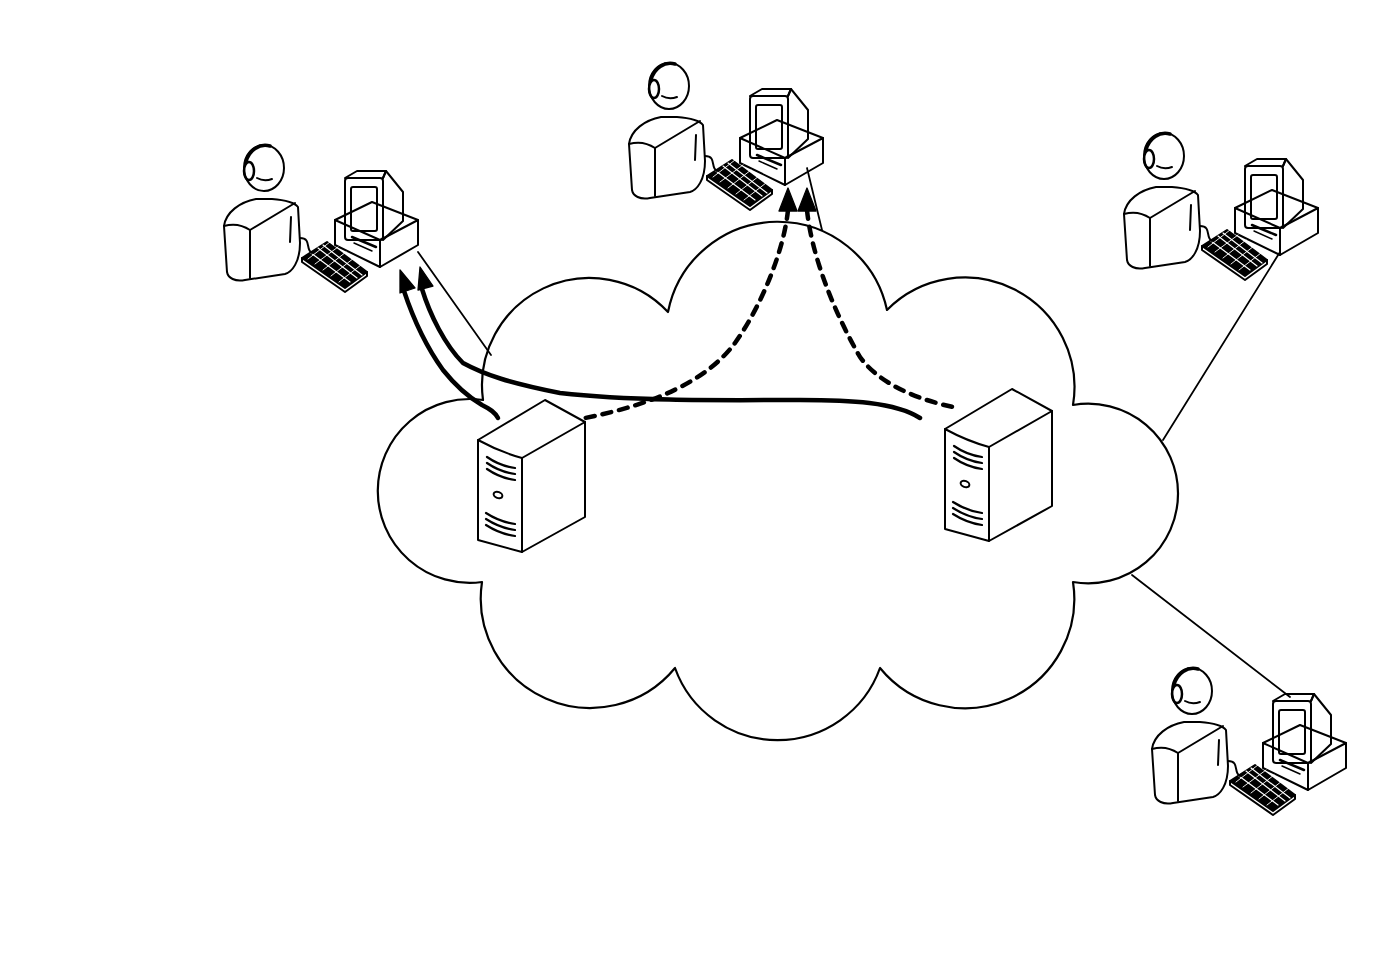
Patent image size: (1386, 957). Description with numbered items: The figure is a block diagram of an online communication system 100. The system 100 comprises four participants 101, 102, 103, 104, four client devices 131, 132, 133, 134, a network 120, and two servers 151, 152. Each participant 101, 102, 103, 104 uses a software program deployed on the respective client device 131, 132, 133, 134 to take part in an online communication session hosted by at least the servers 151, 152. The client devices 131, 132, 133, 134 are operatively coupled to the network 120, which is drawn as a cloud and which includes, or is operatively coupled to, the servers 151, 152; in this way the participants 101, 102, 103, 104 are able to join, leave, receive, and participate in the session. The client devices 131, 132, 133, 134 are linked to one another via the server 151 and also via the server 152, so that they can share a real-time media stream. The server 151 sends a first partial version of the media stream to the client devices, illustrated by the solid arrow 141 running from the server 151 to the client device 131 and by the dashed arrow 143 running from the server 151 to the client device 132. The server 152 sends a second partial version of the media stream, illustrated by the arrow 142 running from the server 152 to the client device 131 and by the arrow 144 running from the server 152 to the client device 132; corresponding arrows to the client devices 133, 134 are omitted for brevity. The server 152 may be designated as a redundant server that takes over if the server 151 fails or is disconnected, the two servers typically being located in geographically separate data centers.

The system 100 is at (80, 57).
The participant 101 is at (242, 193).
The participant 102 is at (647, 111).
The participant 103 is at (1142, 181).
The participant 104 is at (1172, 716).
The network 120 is at (868, 507).
The client device 131 is at (384, 175).
The client device 132 is at (789, 93).
The client device 133 is at (1284, 163).
The client device 134 is at (1312, 696).
The arrow 141 is at (427, 343).
The arrow 142 is at (437, 315).
The arrow 143 is at (740, 340).
The arrow 144 is at (832, 315).
The server 151 is at (543, 540).
The server 152 is at (1025, 523).